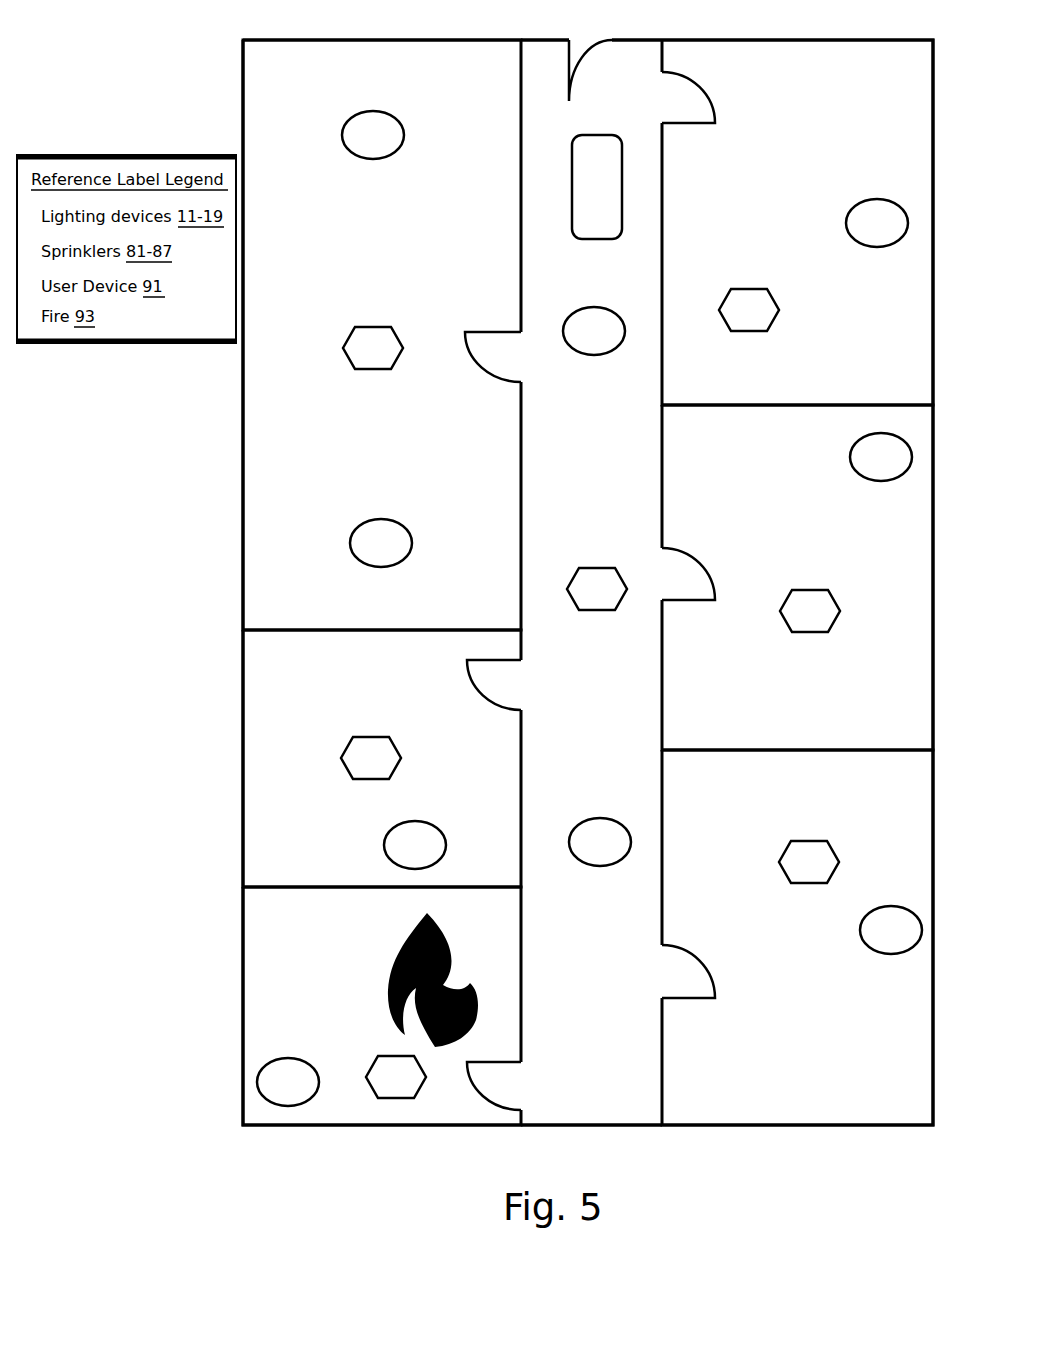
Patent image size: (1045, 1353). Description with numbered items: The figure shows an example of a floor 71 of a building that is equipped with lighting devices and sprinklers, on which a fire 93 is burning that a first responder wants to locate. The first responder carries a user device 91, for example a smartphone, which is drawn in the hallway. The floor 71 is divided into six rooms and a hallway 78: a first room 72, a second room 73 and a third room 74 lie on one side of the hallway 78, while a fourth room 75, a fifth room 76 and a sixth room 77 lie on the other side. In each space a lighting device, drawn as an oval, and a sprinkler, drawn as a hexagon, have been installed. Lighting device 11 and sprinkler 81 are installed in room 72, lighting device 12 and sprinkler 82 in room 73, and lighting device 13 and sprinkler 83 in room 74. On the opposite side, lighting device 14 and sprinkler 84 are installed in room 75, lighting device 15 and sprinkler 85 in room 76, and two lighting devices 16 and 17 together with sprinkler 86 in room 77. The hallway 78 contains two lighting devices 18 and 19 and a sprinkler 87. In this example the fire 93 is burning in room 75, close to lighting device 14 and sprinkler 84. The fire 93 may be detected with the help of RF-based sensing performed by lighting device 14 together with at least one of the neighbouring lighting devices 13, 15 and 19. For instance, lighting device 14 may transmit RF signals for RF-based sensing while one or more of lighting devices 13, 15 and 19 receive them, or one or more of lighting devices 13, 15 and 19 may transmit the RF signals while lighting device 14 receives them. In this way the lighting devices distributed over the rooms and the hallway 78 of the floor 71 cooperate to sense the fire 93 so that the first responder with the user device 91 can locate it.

The lighting device 11 is at (877, 223).
The lighting device 12 is at (881, 457).
The lighting device 13 is at (891, 930).
The lighting device 14 is at (288, 1082).
The lighting device 15 is at (415, 845).
The lighting device 16 is at (381, 543).
The lighting device 17 is at (373, 135).
The lighting device 18 is at (594, 331).
The lighting device 19 is at (600, 842).
The sprinkler 81 is at (749, 310).
The sprinkler 82 is at (810, 611).
The sprinkler 83 is at (809, 862).
The sprinkler 84 is at (396, 1077).
The sprinkler 85 is at (371, 758).
The sprinkler 86 is at (373, 348).
The sprinkler 87 is at (597, 589).
The user device 91 is at (597, 187).
The fire 93 is at (388, 1015).
The floor 71 is at (241, 431).
The room 72 is at (921, 387).
The room 73 is at (921, 738).
The room 74 is at (921, 1105).
The room 75 is at (278, 927).
The room 76 is at (278, 874).
The room 77 is at (278, 73).
The hallway 78 is at (654, 1111).